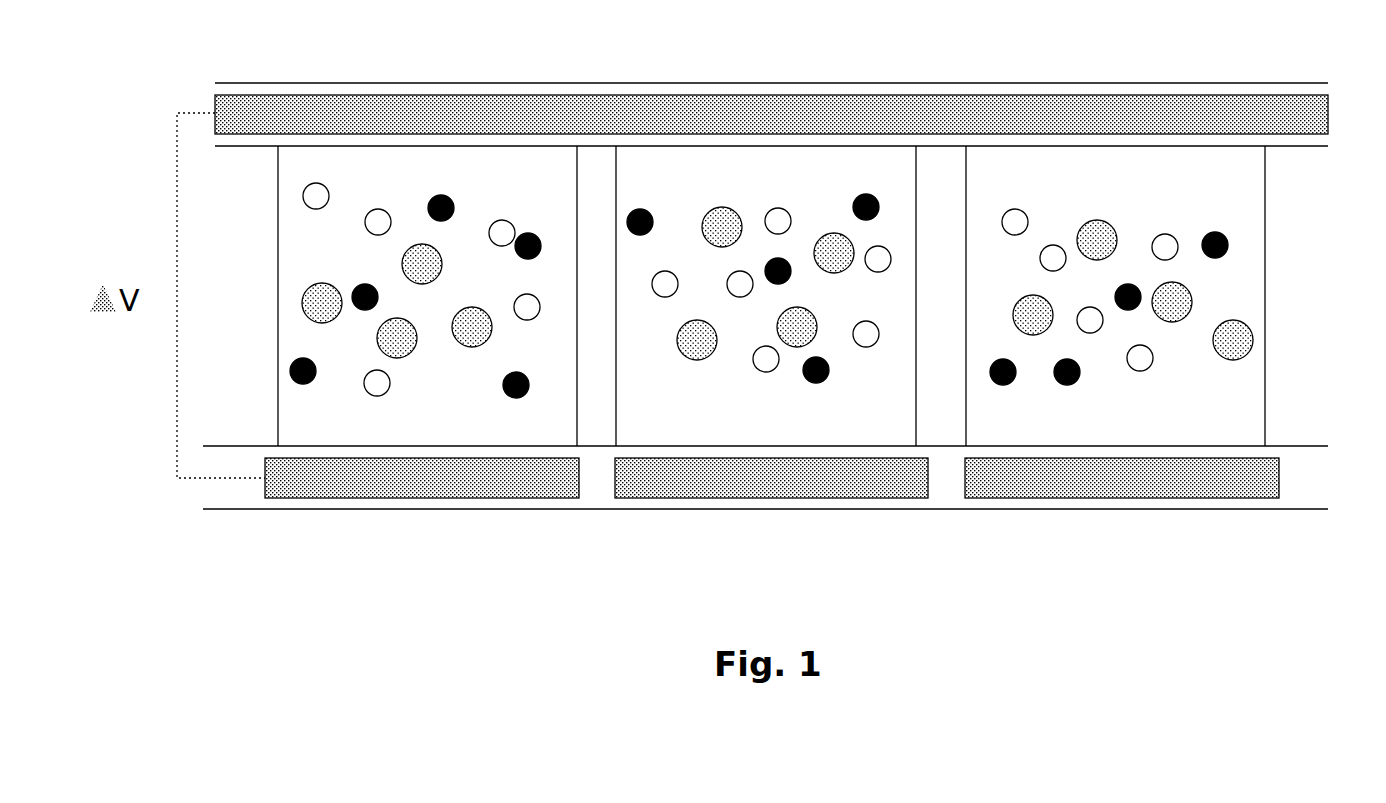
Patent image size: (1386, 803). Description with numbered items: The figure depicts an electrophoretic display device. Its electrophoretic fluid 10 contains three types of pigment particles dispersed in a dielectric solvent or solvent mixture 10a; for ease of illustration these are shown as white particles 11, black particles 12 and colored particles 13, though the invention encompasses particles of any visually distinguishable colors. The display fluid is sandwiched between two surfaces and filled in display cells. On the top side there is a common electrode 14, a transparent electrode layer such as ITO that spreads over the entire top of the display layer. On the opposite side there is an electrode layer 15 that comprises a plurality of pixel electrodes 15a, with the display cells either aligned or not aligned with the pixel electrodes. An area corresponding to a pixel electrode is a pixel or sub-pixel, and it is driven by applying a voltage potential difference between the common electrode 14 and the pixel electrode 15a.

The electrophoretic fluid 10 is at (1286, 272).
The dielectric solvent or solvent mixture 10a is at (1206, 397).
The white particles 11 is at (294, 196).
The black particles 12 is at (280, 370).
The colored particles 13 is at (294, 295).
The common electrode 14 is at (703, 100).
The electrode layer 15 is at (215, 492).
The pixel electrodes 15a is at (428, 494).